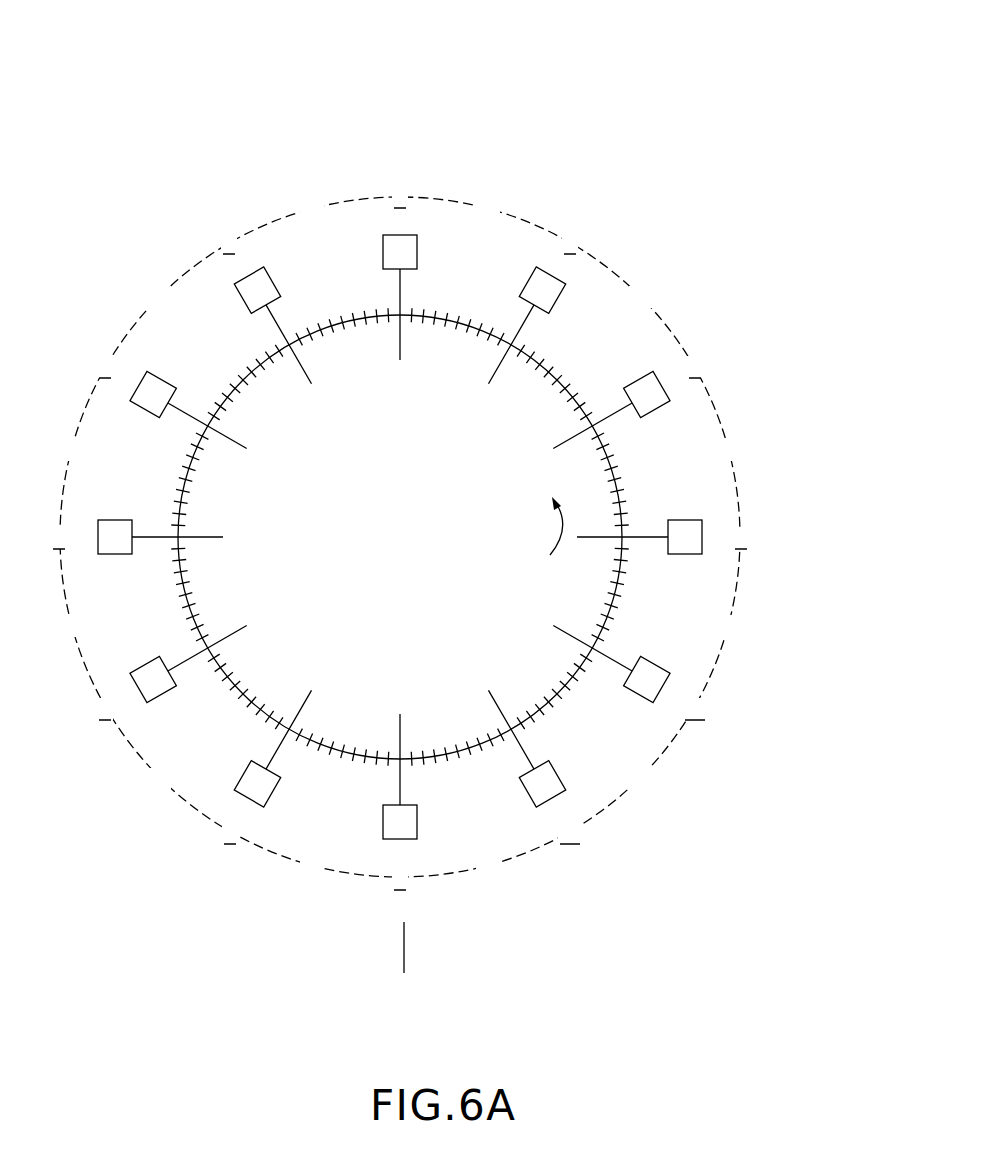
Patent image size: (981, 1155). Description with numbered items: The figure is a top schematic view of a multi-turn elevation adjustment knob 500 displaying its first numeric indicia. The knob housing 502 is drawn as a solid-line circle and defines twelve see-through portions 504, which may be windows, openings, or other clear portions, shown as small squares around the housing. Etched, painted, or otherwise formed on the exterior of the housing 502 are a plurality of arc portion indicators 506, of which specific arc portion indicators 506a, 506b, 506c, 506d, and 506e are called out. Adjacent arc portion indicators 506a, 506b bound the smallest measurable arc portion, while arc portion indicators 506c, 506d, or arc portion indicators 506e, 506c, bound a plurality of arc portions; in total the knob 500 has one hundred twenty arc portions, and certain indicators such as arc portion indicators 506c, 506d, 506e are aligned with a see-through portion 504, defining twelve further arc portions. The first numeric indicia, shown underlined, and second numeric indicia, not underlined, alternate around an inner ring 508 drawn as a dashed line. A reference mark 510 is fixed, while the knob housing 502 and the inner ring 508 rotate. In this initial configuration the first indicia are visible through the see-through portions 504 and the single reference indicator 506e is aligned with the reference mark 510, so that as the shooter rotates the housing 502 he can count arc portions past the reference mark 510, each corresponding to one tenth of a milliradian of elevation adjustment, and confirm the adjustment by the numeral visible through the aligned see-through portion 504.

The multi-turn elevation adjustment knob 500 is at (645, 103).
The knob housing 502 is at (397, 542).
The see-through portion 504 is at (656, 673).
The arc portion indicator 506 is at (555, 670).
The arc portion indicator 506a is at (256, 680).
The arc portion indicator 506b is at (246, 672).
The arc portion indicator 506c is at (240, 537).
The arc portion indicator 506d is at (265, 444).
The single reference indicator 506e is at (401, 712).
The inner ring 508 is at (663, 328).
The reference mark 510 is at (405, 956).